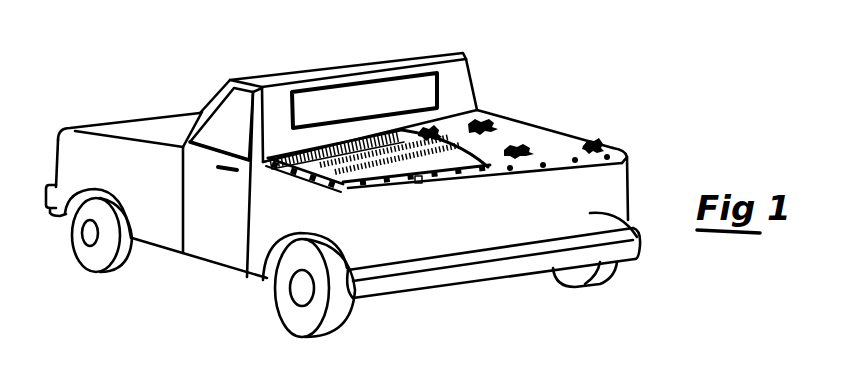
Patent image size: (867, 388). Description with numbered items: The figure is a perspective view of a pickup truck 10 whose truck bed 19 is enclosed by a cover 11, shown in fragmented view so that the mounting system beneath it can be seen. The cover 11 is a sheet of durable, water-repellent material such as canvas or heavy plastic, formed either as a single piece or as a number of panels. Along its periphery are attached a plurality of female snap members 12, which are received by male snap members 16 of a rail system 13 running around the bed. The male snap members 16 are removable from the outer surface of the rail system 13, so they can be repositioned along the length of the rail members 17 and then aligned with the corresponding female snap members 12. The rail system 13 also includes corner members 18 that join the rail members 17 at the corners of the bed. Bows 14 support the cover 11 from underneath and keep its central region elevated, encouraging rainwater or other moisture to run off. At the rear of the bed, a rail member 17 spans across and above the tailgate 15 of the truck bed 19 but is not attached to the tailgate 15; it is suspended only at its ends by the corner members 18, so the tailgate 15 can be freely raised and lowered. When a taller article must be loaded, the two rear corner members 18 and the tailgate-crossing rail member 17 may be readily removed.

The pickup truck 10 is at (455, 38).
The cover 11 is at (533, 133).
The female snap members 12 is at (607, 157).
The rail system 13 is at (353, 197).
The bows 14 is at (307, 163).
The tailgate 15 is at (638, 238).
The male snap members 16 is at (420, 184).
The rail members 17 is at (400, 188).
The corner members 18 is at (350, 187).
The truck bed 19 is at (637, 182).